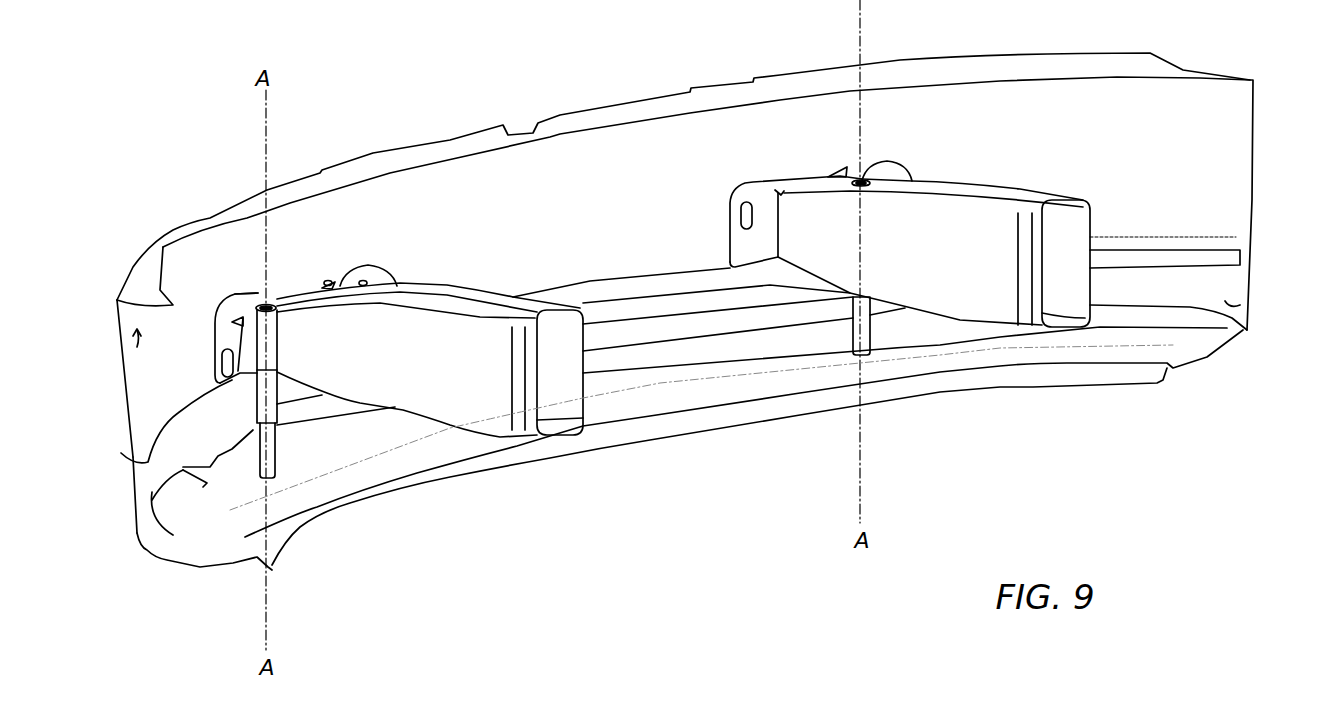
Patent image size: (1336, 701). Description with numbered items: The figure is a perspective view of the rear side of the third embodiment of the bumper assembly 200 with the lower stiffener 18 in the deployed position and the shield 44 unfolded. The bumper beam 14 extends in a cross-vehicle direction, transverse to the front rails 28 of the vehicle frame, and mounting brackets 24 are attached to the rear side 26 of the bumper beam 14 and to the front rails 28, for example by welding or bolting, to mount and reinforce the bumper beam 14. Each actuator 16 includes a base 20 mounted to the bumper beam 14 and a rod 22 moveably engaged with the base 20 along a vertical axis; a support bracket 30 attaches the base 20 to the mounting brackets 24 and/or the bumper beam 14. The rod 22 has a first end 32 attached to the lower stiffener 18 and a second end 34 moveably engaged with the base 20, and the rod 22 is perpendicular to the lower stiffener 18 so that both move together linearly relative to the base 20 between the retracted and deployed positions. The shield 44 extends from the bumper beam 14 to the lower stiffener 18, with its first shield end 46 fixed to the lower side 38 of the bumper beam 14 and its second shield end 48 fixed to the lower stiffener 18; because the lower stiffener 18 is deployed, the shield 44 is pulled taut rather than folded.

The bumper assembly 200 is at (146, 179).
The bumper beam 14 is at (1257, 137).
The actuator 16 is at (248, 400).
The lower stiffener 18 is at (623, 437).
The base 20 is at (233, 392).
The rod 22 is at (278, 437).
The mounting brackets 24 is at (370, 267).
The rear side 26 is at (117, 350).
The front rails 28 is at (470, 290).
The support bracket 30 is at (250, 342).
The first end 32 is at (263, 480).
The second end 34 is at (263, 303).
The lower side 38 is at (1240, 281).
The shield 44 is at (1247, 297).
The first shield end 46 is at (133, 460).
The second shield end 48 is at (140, 530).